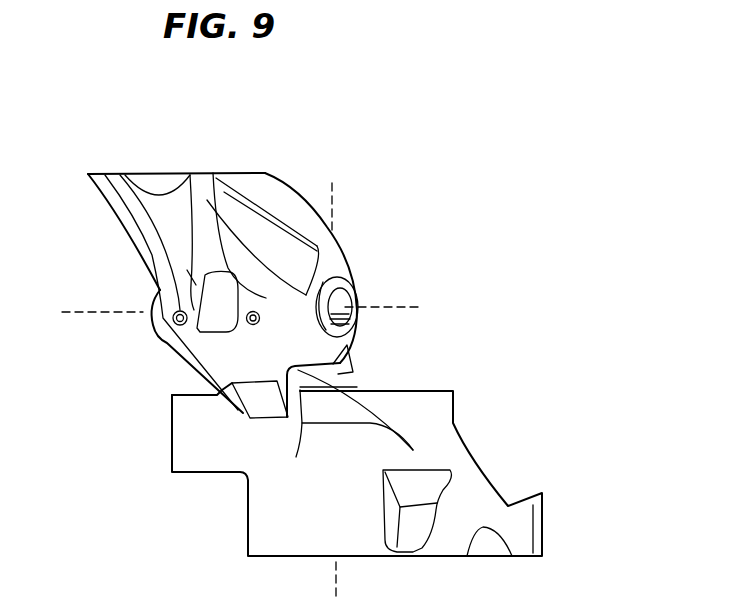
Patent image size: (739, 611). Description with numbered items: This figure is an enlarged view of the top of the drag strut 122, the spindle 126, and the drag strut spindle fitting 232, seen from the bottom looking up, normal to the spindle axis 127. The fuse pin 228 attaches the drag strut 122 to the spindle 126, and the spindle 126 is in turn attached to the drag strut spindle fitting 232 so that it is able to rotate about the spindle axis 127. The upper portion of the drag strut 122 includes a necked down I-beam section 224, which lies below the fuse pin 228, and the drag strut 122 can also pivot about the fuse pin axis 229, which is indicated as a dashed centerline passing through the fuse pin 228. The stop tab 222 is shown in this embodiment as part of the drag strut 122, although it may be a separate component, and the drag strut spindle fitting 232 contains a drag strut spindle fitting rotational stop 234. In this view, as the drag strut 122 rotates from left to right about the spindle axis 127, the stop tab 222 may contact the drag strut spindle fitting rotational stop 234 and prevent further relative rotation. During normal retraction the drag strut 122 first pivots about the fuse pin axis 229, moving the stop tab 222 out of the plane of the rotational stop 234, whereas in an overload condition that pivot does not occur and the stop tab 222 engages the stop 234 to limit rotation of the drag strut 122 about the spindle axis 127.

The drag strut 122 is at (298, 249).
The necked down I-beam section 224 is at (285, 205).
The spindle axis 127 is at (333, 205).
The fuse pin 228 is at (345, 300).
The fuse pin axis 229 is at (82, 312).
The spindle 126 is at (352, 370).
The drag strut spindle fitting rotational stop 234 is at (345, 406).
The drag strut spindle fitting 232 is at (397, 458).
The stop tab 222 is at (262, 405).